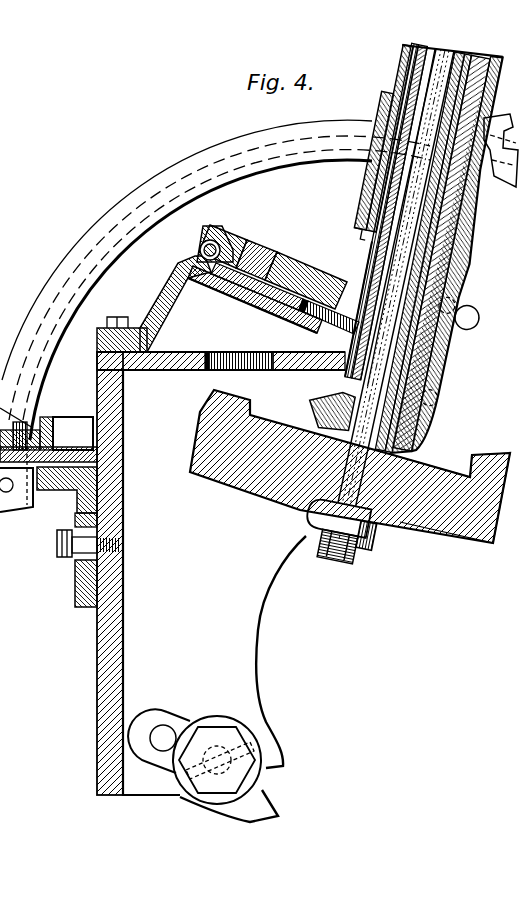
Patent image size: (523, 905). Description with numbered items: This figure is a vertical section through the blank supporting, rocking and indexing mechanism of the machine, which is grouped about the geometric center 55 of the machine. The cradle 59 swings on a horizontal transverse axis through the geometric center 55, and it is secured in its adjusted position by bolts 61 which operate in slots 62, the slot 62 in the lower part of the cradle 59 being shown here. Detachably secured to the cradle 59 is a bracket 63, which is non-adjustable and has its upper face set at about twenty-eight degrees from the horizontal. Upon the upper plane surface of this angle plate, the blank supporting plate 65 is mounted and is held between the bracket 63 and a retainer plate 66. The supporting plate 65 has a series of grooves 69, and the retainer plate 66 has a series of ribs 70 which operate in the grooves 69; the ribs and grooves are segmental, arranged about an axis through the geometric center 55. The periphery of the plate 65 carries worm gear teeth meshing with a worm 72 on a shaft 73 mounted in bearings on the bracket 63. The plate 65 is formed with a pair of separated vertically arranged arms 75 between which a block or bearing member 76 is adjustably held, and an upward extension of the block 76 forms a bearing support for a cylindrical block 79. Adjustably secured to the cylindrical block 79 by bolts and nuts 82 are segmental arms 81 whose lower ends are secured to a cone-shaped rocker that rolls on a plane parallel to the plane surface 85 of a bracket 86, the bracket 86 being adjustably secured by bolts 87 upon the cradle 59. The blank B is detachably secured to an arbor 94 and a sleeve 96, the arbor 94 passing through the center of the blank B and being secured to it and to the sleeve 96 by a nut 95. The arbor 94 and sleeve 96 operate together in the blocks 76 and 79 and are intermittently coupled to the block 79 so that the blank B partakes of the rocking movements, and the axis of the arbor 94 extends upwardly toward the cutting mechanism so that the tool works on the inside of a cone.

The segmental arms 81 is at (160, 180).
The bracket 63 is at (178, 261).
The grooves 69 is at (243, 276).
The retainer plate 66 is at (242, 255).
The ribs 70 is at (266, 256).
The blank supporting plate 65 is at (296, 260).
The worm 72 is at (201, 236).
The shaft 73 is at (213, 238).
The cylindrical block 79 is at (367, 121).
The bolts and nuts 82 is at (497, 117).
The sleeve 96 is at (449, 260).
The block or bearing member 76 is at (456, 262).
The arms 75 is at (466, 339).
The arbor 94 is at (424, 316).
The nut 95 is at (347, 550).
The geometric center 55 is at (292, 497).
The blank B is at (478, 521).
The cradle 59 is at (240, 582).
The slots 62 is at (164, 722).
The bolts 61 is at (210, 747).
The plane surface 85 is at (43, 490).
The bracket 86 is at (74, 490).
The bolts 87 is at (63, 553).